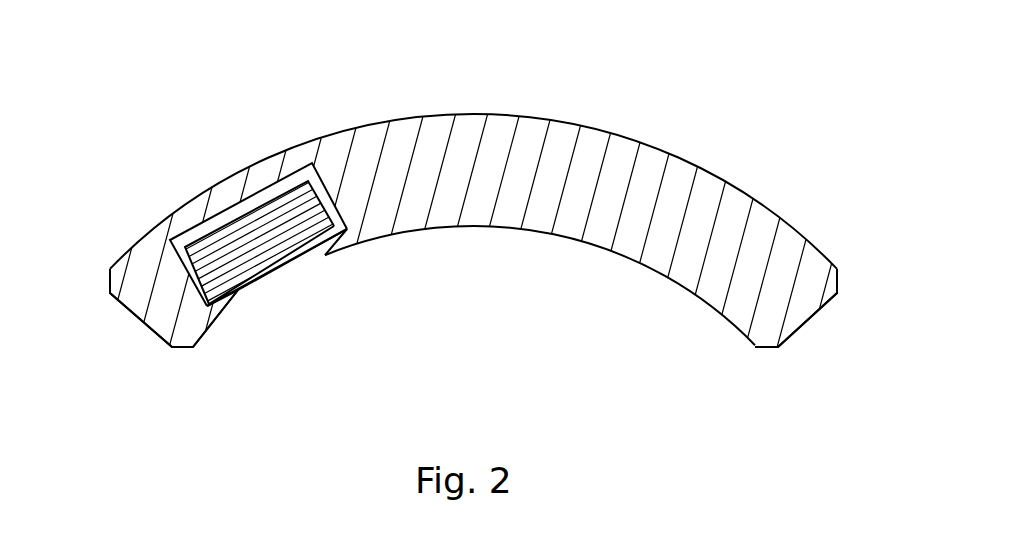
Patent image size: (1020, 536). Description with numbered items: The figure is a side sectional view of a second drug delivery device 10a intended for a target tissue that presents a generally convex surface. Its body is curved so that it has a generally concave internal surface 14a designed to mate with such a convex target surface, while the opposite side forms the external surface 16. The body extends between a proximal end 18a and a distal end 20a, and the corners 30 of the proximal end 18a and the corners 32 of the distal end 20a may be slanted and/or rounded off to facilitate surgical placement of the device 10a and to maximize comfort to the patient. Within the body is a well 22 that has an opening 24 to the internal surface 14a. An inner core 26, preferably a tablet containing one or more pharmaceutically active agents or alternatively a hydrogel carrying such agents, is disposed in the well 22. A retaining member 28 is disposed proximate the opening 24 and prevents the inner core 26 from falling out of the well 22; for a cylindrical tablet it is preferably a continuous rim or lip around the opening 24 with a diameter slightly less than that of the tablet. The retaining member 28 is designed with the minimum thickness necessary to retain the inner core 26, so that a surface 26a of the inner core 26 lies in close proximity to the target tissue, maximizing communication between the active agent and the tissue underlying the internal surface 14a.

The drug delivery device 10a is at (648, 56).
The concave internal surface 14a is at (565, 240).
The external surface 16 is at (502, 113).
The proximal end 18a is at (800, 323).
The distal end 20a is at (160, 340).
The well 22 is at (210, 216).
The opening 24 is at (306, 277).
The inner core 26 is at (304, 195).
The surface of inner core 26a is at (271, 275).
The retaining member 28 is at (342, 256).
The corners of proximal end 30 is at (840, 282).
The corners of distal end 32 is at (110, 278).